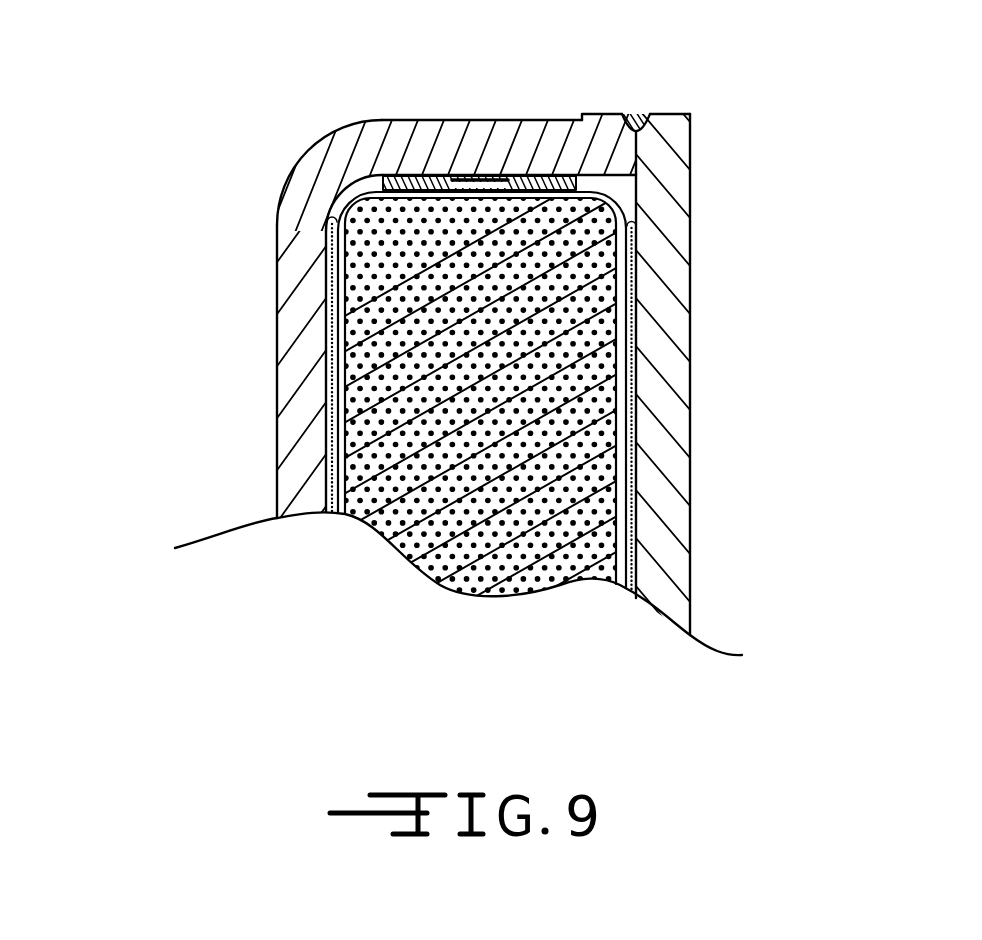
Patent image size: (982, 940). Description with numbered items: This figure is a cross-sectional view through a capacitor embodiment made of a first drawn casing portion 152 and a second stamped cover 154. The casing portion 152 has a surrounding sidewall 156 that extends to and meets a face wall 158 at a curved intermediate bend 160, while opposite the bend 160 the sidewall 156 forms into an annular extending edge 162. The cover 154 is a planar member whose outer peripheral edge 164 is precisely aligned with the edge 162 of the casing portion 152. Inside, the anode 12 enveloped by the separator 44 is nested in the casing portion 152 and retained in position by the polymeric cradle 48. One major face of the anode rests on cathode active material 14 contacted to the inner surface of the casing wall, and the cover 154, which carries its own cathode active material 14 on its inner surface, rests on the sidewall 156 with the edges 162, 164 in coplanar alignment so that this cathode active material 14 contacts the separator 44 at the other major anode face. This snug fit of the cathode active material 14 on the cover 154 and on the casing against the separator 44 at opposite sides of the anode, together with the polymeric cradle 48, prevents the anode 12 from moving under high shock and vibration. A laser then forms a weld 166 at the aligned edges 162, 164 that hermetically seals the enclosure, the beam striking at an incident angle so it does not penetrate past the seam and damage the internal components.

The anode 12 is at (612, 440).
The cathode active material 14 is at (328, 211).
The separator 44 is at (622, 200).
The polymeric cradle 48 is at (425, 177).
The first drawn casing portion 152 is at (214, 446).
The second stamped cover 154 is at (670, 223).
The sidewall 156 is at (483, 118).
The face wall 158 is at (285, 347).
The curved intermediate bend 160 is at (307, 152).
The annular extending edge 162 is at (600, 113).
The outer peripheral edge 164 is at (668, 113).
The weld 166 is at (638, 113).